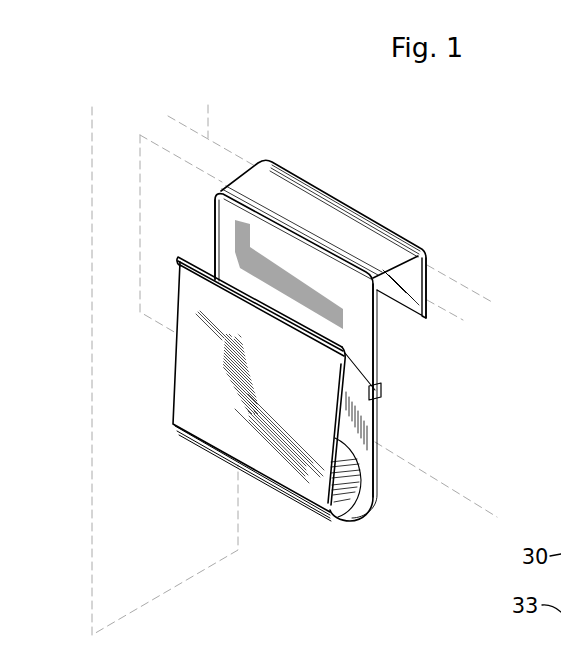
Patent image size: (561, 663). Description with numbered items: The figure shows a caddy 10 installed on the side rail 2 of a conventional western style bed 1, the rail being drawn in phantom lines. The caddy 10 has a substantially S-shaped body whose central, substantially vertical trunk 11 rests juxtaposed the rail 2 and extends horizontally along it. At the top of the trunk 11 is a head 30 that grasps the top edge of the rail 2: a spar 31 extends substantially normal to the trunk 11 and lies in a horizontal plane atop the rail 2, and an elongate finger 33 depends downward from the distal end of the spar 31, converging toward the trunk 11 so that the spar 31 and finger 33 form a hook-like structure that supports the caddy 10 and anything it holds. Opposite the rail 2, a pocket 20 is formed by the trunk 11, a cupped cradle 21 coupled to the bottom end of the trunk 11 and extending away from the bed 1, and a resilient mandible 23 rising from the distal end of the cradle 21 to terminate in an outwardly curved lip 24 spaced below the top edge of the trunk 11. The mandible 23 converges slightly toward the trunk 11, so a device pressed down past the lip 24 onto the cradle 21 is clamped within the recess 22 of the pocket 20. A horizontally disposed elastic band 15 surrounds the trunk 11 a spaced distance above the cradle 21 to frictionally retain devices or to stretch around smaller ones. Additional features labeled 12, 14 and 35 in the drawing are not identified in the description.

The bed 1 is at (112, 175).
The side rail 2 is at (212, 138).
The caddy 10 is at (462, 152).
The trunk 11 is at (329, 357).
The side edges of front plate 12 is at (217, 242).
The display surface 14 is at (338, 291).
The elastic band 15 is at (378, 400).
The pocket 20 is at (252, 405).
The cupped cradle 21 is at (354, 521).
The recess 22 is at (331, 518).
The resilient mandible 23 is at (212, 373).
The outwardly curved lip 24 is at (213, 276).
The head 30 is at (369, 206).
The spar 31 is at (357, 238).
The elongate finger 33 is at (447, 310).
The inner face of rear leg 35 is at (413, 298).